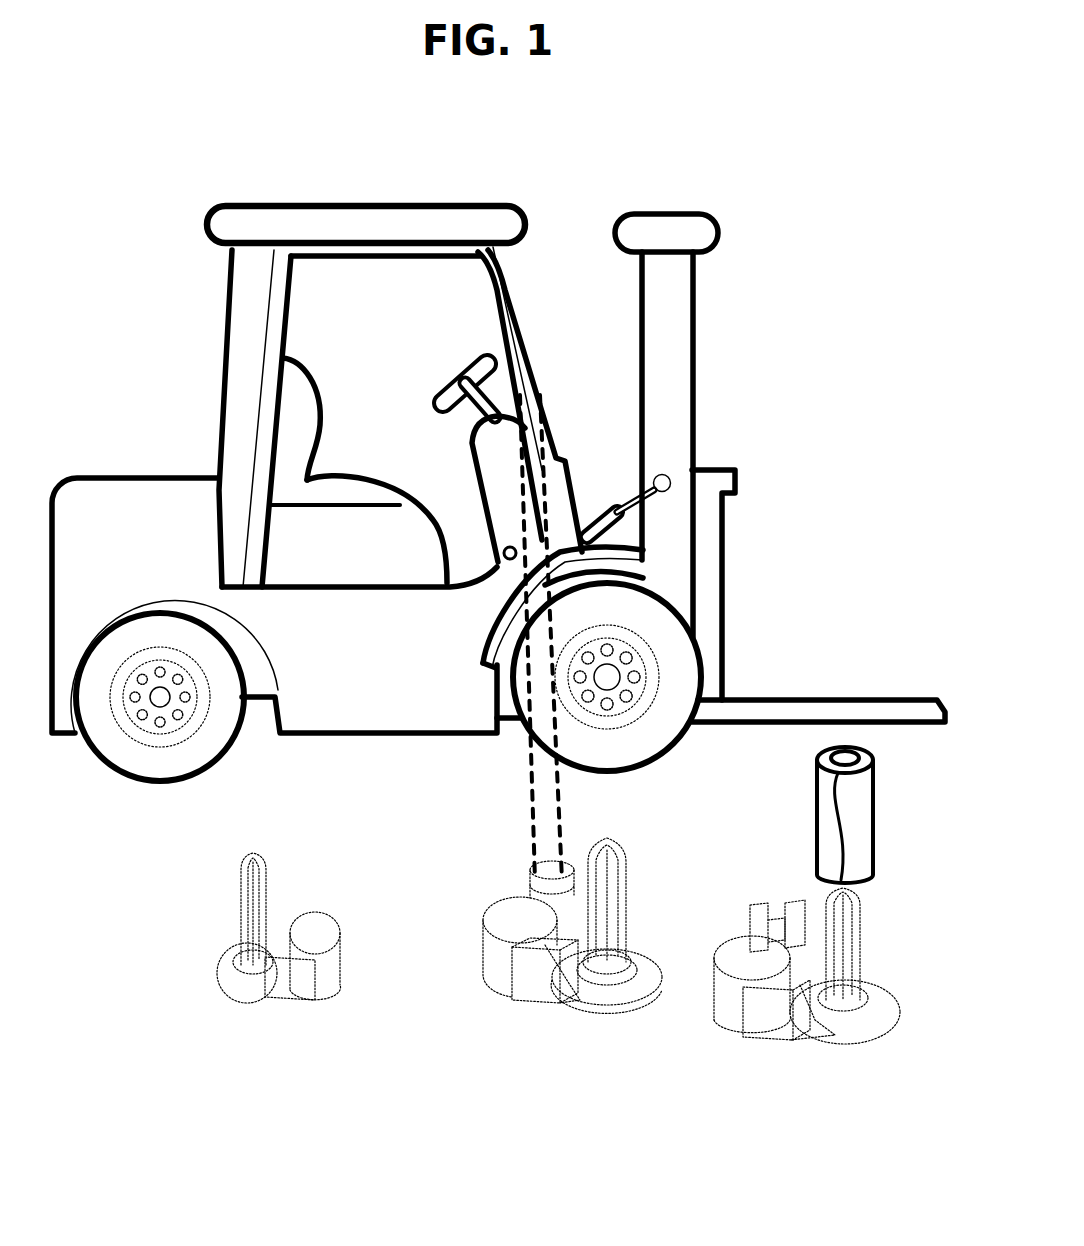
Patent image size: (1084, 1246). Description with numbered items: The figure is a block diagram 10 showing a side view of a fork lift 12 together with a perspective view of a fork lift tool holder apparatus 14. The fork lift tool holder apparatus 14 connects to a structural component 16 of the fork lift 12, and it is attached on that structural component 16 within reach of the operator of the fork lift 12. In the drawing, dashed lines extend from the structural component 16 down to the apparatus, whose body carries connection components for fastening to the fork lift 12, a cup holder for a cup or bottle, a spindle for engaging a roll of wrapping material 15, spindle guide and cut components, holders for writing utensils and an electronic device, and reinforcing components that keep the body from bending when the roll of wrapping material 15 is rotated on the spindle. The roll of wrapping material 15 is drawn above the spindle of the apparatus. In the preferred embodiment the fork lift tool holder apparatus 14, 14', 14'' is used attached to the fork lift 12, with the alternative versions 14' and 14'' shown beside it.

The block diagram 10 is at (733, 145).
The fork lift 12 is at (421, 200).
The fork lift tool holder apparatus 14 is at (559, 947).
The fork lift tool holder apparatus 14' is at (795, 998).
The fork lift tool holder apparatus 14'' is at (279, 971).
The roll of wrapping material 15 is at (862, 833).
The structural component 16 is at (532, 357).